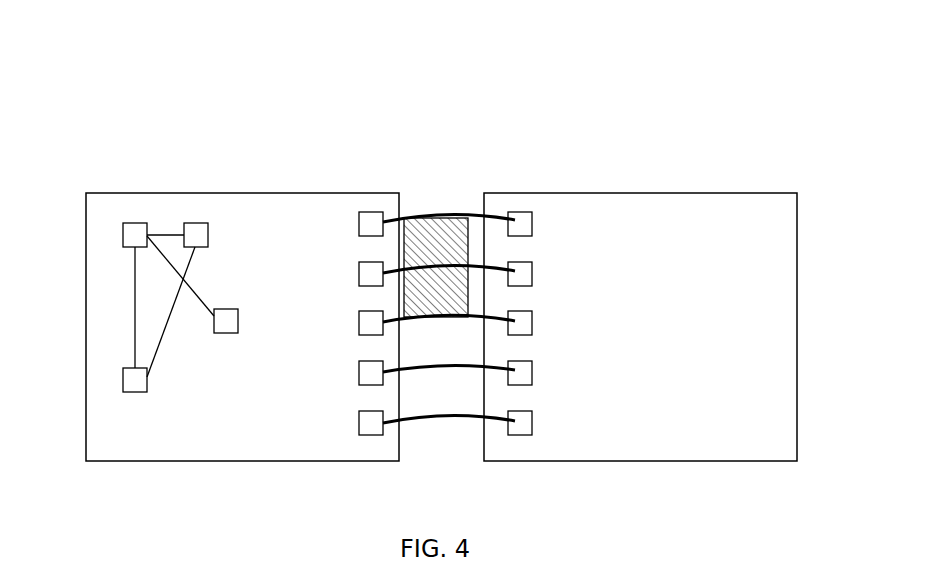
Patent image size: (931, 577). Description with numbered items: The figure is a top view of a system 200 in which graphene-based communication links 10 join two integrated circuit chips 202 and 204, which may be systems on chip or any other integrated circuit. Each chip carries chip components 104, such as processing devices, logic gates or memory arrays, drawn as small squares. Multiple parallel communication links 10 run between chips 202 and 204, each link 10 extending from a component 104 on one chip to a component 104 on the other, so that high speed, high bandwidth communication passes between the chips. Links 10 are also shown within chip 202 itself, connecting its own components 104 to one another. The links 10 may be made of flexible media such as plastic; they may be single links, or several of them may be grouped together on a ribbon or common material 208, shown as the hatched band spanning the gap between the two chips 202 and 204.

The system 200 is at (449, 61).
The integrated circuit chip 202 is at (307, 193).
The integrated circuit chip 204 is at (797, 440).
The ribbon or common material 208 is at (418, 232).
The chip component 104 is at (127, 222).
The graphene-based communication link 10 is at (175, 233).